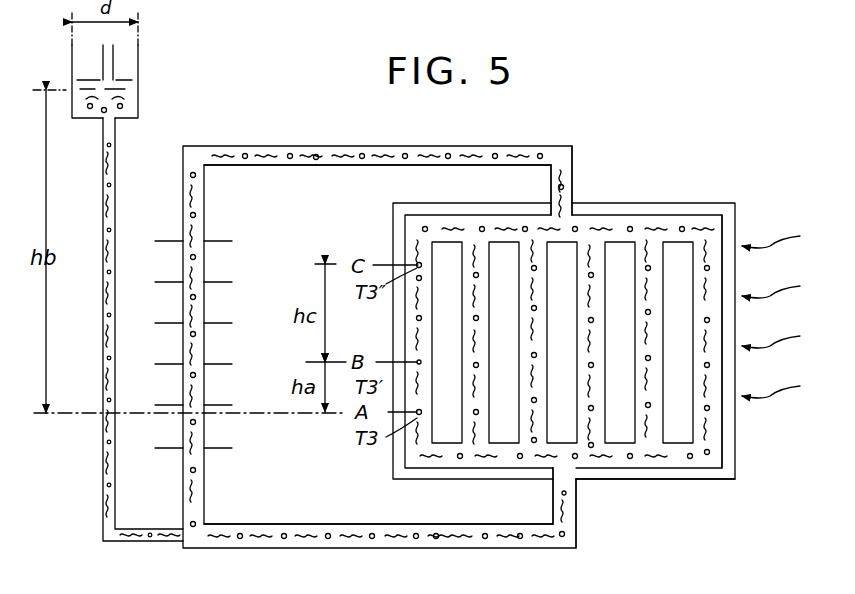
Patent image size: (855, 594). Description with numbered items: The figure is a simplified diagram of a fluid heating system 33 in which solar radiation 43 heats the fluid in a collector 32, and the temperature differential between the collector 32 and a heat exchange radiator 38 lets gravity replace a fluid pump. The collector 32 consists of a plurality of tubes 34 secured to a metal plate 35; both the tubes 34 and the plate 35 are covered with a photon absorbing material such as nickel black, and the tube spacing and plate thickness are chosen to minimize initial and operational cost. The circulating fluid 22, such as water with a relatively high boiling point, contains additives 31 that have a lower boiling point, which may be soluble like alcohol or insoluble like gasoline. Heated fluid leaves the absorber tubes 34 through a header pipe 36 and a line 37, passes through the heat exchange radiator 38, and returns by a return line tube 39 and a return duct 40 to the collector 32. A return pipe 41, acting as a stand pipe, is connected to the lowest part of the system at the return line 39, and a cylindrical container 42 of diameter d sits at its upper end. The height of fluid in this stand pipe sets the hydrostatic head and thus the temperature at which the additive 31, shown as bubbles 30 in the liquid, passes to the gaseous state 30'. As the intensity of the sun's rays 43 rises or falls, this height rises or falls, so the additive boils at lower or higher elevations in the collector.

The circulating fluid 22 is at (258, 152).
The additive bubbles in liquid state 30 is at (399, 526).
The gaseous state of additive 30' is at (426, 159).
The additives 31 is at (726, 474).
The collector 32 is at (669, 204).
The fluid heating system 33 is at (567, 140).
The tubes 34 is at (722, 458).
The metal plate 35 is at (680, 481).
The header pipe 36 is at (577, 167).
The line 37 is at (397, 150).
The heat exchange radiator 38 is at (228, 301).
The return line tube 39 is at (379, 549).
The return duct 40 is at (577, 510).
The return pipe 41 is at (103, 461).
The cylindrical container 42 is at (139, 87).
The solar radiation 43 is at (782, 317).